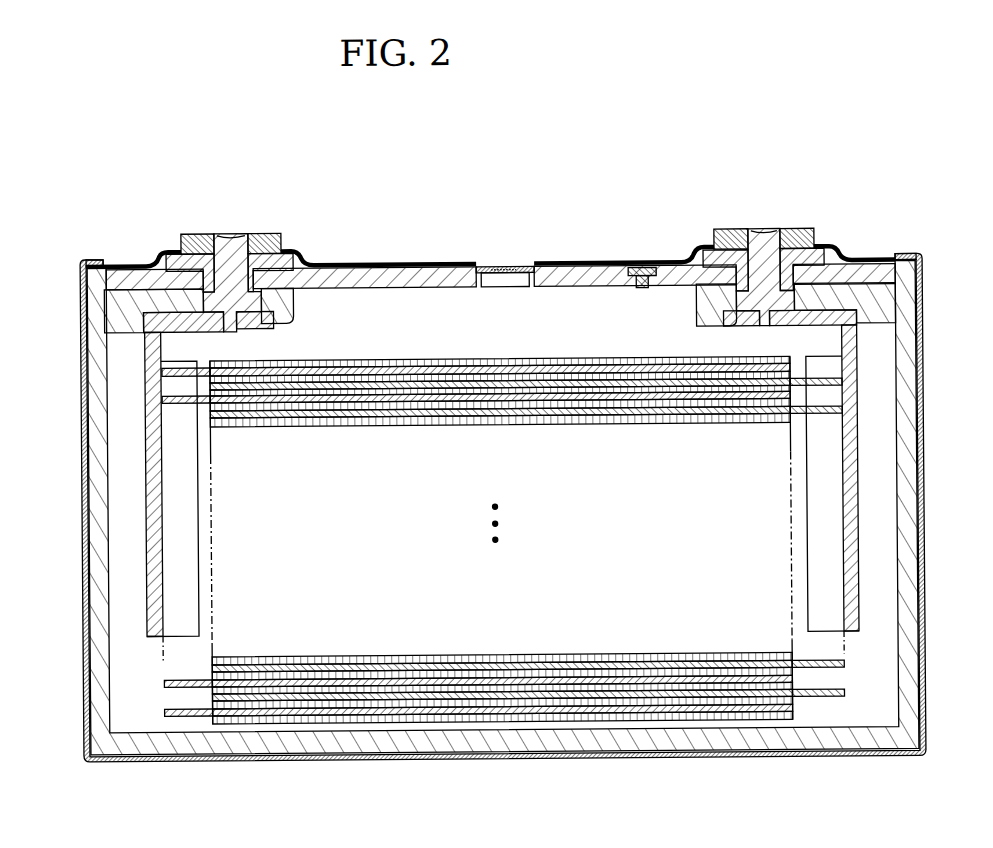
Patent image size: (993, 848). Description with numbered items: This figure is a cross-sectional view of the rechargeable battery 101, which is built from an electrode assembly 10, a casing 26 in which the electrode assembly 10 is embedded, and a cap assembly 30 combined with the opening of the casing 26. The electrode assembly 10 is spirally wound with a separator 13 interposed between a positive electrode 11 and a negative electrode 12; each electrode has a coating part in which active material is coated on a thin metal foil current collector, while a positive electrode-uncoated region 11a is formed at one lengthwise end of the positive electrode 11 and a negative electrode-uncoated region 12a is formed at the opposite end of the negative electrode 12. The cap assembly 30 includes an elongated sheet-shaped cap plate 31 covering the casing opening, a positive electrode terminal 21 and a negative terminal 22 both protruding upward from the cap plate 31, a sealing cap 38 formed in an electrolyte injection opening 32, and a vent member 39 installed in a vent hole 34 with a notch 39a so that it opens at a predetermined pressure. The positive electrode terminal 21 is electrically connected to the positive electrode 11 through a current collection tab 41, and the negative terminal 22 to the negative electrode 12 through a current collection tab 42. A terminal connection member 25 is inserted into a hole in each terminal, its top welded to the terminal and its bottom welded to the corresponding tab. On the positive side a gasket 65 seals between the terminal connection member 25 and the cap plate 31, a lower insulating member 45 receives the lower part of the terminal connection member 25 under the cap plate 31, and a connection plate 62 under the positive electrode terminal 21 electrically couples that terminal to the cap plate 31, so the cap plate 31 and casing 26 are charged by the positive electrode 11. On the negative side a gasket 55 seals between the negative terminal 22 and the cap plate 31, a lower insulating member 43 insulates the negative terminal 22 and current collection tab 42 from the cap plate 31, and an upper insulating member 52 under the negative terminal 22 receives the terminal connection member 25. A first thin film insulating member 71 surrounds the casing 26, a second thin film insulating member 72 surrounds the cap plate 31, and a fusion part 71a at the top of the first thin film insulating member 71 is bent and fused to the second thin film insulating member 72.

The rechargeable battery 101 is at (548, 118).
The first thin film insulating member 71 is at (86, 367).
The fusion part 71a is at (106, 262).
The casing 26 is at (921, 547).
The cap assembly 30 is at (466, 266).
The cap plate 31 is at (871, 275).
The vent hole 34 is at (507, 293).
The vent member 39 is at (530, 268).
The notch 39a is at (507, 270).
The sealing cap 38 is at (645, 271).
The electrolyte injection opening 32 is at (648, 297).
The gasket 55 is at (162, 276).
The second thin film insulating member 72 is at (346, 266).
The gasket 65 is at (700, 259).
The negative terminal 22 is at (200, 236).
The positive electrode terminal 21 is at (800, 235).
The terminal connection member 25 is at (236, 240).
The upper insulating member 52 is at (292, 264).
The connection plate 62 is at (822, 261).
The lower insulating member 43 is at (120, 313).
The lower insulating member 45 is at (882, 316).
The current collection tab 42 is at (157, 431).
The current collection tab 41 is at (859, 451).
The electrode assembly 10 is at (504, 585).
The separator 13 is at (510, 692).
The negative electrode 12 is at (308, 714).
The negative electrode-uncoated region 12a is at (178, 692).
The positive electrode 11 is at (698, 703).
The positive electrode-uncoated region 11a is at (823, 704).